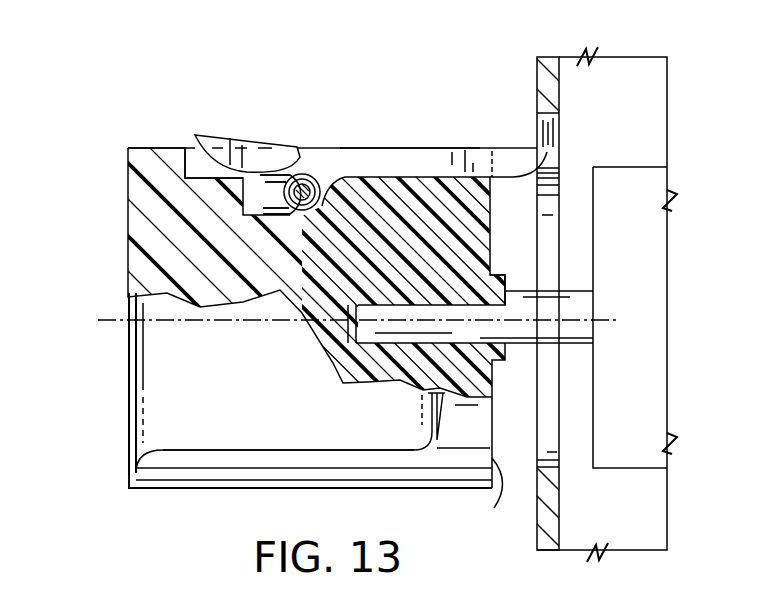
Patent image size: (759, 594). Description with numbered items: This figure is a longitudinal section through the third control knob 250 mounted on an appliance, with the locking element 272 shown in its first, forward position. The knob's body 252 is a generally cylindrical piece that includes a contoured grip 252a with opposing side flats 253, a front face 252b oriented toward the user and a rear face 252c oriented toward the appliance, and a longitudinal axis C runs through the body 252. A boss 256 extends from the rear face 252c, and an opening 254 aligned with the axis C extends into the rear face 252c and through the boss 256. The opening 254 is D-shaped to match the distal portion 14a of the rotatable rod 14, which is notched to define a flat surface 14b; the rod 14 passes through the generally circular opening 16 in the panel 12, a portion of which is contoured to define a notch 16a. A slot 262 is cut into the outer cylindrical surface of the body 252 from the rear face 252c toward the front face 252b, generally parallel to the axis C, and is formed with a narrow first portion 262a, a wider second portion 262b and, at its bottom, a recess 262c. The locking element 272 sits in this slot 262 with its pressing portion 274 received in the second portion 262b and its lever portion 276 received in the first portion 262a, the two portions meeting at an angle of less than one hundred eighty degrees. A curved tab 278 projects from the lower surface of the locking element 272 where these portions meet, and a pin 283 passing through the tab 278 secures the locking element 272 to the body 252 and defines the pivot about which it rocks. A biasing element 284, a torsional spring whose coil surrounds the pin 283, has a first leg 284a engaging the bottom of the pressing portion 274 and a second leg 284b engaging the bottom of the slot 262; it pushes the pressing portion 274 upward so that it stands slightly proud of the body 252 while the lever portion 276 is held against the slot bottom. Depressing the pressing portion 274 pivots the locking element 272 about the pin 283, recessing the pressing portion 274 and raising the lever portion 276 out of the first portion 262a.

The panel 12 is at (537, 80).
The rotatable rod 14 is at (576, 288).
The distal portion 14a is at (462, 333).
The flat surface 14b is at (372, 303).
The opening 16 is at (552, 462).
The notch 16a is at (555, 132).
The control knob 250 is at (88, 130).
The body 252 is at (187, 485).
The contoured grip 252a is at (247, 440).
The front face 252b is at (127, 400).
The rear face 252c is at (497, 490).
The side flats 253 is at (360, 430).
The opening 254 is at (482, 342).
The boss 256 is at (508, 283).
The slot 262 is at (378, 175).
The first portion 262a is at (442, 165).
The second portion 262b is at (195, 157).
The recess 262c is at (341, 195).
The locking element 272 is at (415, 147).
The pressing portion 274 is at (217, 135).
The lever portion 276 is at (483, 152).
The curved tab 278 is at (333, 232).
The pin 283 is at (303, 173).
The biasing element 284 is at (290, 225).
The first leg 284a is at (286, 175).
The second leg 284b is at (263, 221).
The longitudinal axis C is at (108, 321).